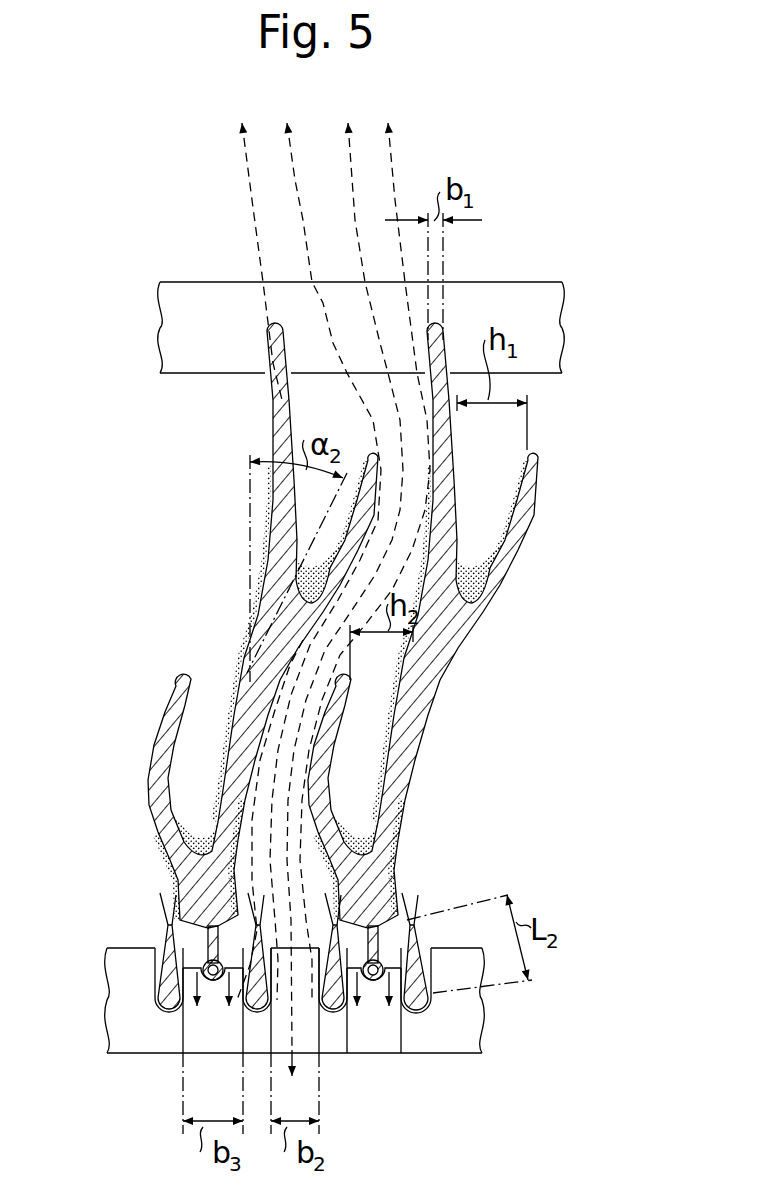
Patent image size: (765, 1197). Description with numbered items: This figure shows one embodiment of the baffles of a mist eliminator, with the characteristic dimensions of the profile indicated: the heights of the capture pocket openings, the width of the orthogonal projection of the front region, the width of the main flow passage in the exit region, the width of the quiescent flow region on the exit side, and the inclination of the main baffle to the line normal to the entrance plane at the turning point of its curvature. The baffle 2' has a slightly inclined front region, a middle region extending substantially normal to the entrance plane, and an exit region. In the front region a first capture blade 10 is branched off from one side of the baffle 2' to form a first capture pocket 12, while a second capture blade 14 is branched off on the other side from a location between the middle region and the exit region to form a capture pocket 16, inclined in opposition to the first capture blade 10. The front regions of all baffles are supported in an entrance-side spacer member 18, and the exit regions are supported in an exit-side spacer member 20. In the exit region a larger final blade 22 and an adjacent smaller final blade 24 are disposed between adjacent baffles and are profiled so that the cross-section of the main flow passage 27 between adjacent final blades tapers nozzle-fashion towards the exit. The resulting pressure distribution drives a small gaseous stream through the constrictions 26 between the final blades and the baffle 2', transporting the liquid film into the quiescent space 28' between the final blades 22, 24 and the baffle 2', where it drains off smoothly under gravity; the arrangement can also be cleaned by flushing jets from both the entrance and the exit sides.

The hollow profile strip 2' is at (344, 710).
The first capture blade 10 is at (535, 477).
The first capture pocket 12 is at (477, 553).
The second capture blade 14 is at (170, 704).
The capture pocket 16 is at (192, 813).
The entrance-side spacer member 18 is at (522, 302).
The exit-side spacer member 20 is at (130, 1024).
The larger final blade 22 is at (411, 923).
The smaller final blade 24 is at (158, 994).
The constriction 26 is at (172, 917).
The main flow passage 27 is at (303, 1007).
The quiescent space 28' is at (283, 1011).